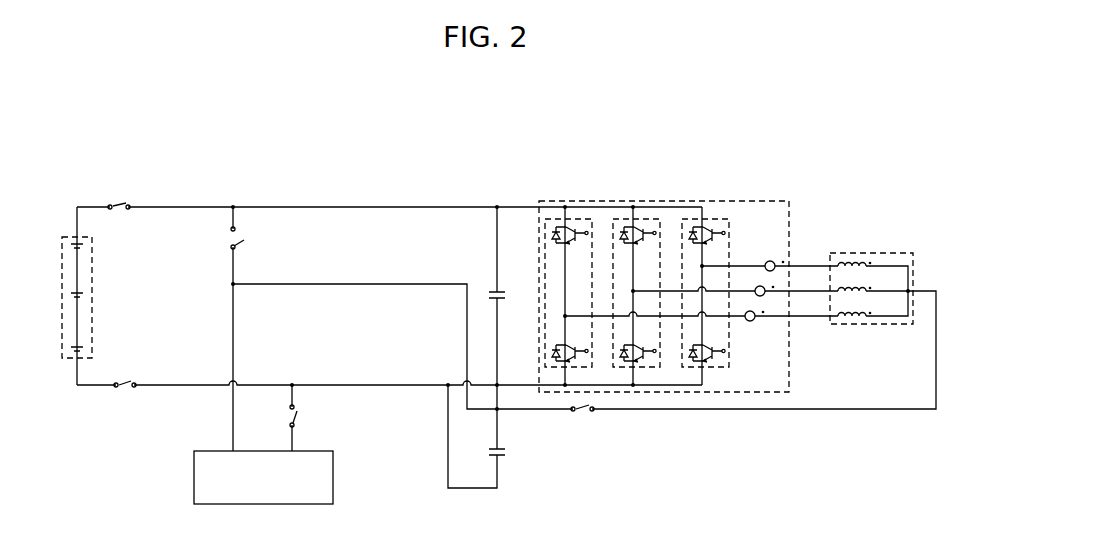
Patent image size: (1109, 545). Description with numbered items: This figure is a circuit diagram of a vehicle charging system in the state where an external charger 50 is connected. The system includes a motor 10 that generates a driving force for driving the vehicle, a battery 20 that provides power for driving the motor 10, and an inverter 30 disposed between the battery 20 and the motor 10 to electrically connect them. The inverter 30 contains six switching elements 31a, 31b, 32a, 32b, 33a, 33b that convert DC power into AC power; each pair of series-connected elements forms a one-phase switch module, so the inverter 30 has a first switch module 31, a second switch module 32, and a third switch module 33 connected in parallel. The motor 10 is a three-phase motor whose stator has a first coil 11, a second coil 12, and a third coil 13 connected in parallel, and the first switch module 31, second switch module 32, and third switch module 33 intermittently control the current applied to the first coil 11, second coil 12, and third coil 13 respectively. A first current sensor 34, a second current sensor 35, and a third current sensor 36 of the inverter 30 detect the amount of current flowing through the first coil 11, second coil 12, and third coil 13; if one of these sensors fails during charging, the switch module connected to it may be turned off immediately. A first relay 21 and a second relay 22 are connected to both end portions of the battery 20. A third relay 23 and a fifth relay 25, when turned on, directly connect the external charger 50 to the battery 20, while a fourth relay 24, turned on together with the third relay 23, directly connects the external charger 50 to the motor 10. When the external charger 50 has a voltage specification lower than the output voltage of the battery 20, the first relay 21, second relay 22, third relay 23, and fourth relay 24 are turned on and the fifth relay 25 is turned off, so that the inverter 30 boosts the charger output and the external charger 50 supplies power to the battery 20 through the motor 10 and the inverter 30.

The motor 10 is at (898, 253).
The first coil 11 is at (848, 262).
The second coil 12 is at (862, 290).
The third coil 13 is at (852, 320).
The battery 20 is at (92, 308).
The first relay 21 is at (118, 209).
The second relay 22 is at (133, 382).
The third relay 23 is at (296, 418).
The fourth relay 24 is at (583, 412).
The fifth relay 25 is at (243, 237).
The inverter 30 is at (753, 201).
The first switch module 31 is at (713, 226).
The switching element 31a is at (693, 228).
The switching element 31b is at (694, 366).
The second switch module 32 is at (641, 226).
The switching element 32a is at (623, 228).
The switching element 32b is at (625, 366).
The third switch module 33 is at (569, 226).
The switching element 33a is at (557, 226).
The switching element 33b is at (557, 366).
The first current sensor 34 is at (775, 262).
The second current sensor 35 is at (758, 286).
The third current sensor 36 is at (752, 322).
The external charger 50 is at (194, 478).